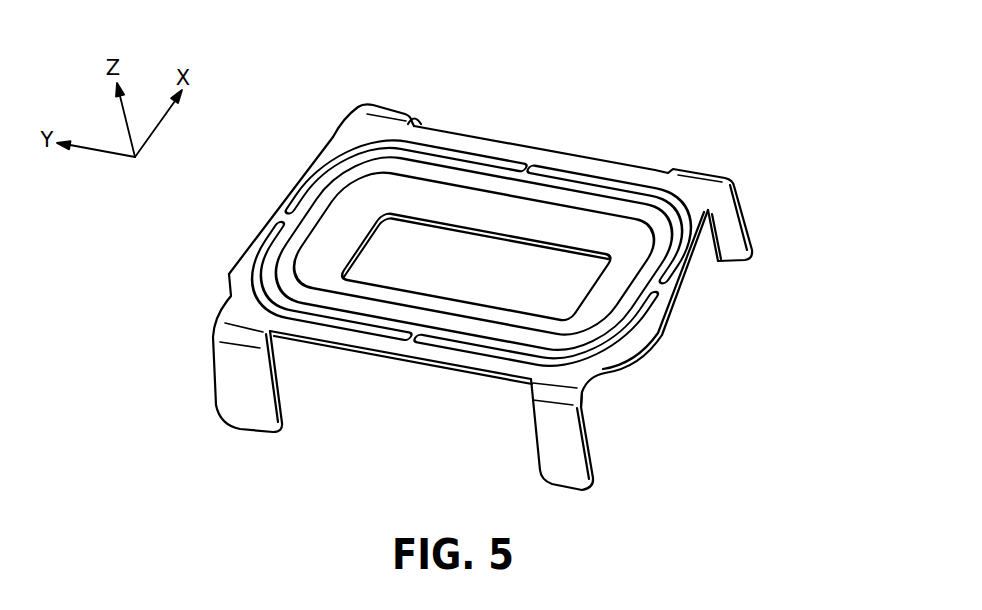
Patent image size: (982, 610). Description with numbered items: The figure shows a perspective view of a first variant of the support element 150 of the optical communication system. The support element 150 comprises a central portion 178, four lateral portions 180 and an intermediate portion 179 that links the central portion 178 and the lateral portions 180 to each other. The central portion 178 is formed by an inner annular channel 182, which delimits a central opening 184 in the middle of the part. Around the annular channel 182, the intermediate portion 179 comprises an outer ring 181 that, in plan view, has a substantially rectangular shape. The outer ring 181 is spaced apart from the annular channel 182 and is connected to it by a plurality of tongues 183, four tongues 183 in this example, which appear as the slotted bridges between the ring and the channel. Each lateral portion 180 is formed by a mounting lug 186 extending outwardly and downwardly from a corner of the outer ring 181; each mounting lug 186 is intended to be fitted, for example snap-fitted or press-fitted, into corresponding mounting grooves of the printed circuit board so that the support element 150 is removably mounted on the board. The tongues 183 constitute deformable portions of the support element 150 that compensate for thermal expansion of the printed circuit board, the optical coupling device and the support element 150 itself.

The support element 150 is at (471, 278).
The central portion 178 is at (536, 262).
The intermediate portion 179 is at (698, 320).
The lateral portion 180 is at (407, 84).
The outer ring 181 is at (470, 146).
The inner annular channel 182 is at (316, 262).
The tongue 183 is at (529, 167).
The central opening 184 is at (412, 283).
The mounting lug 186 is at (382, 106).